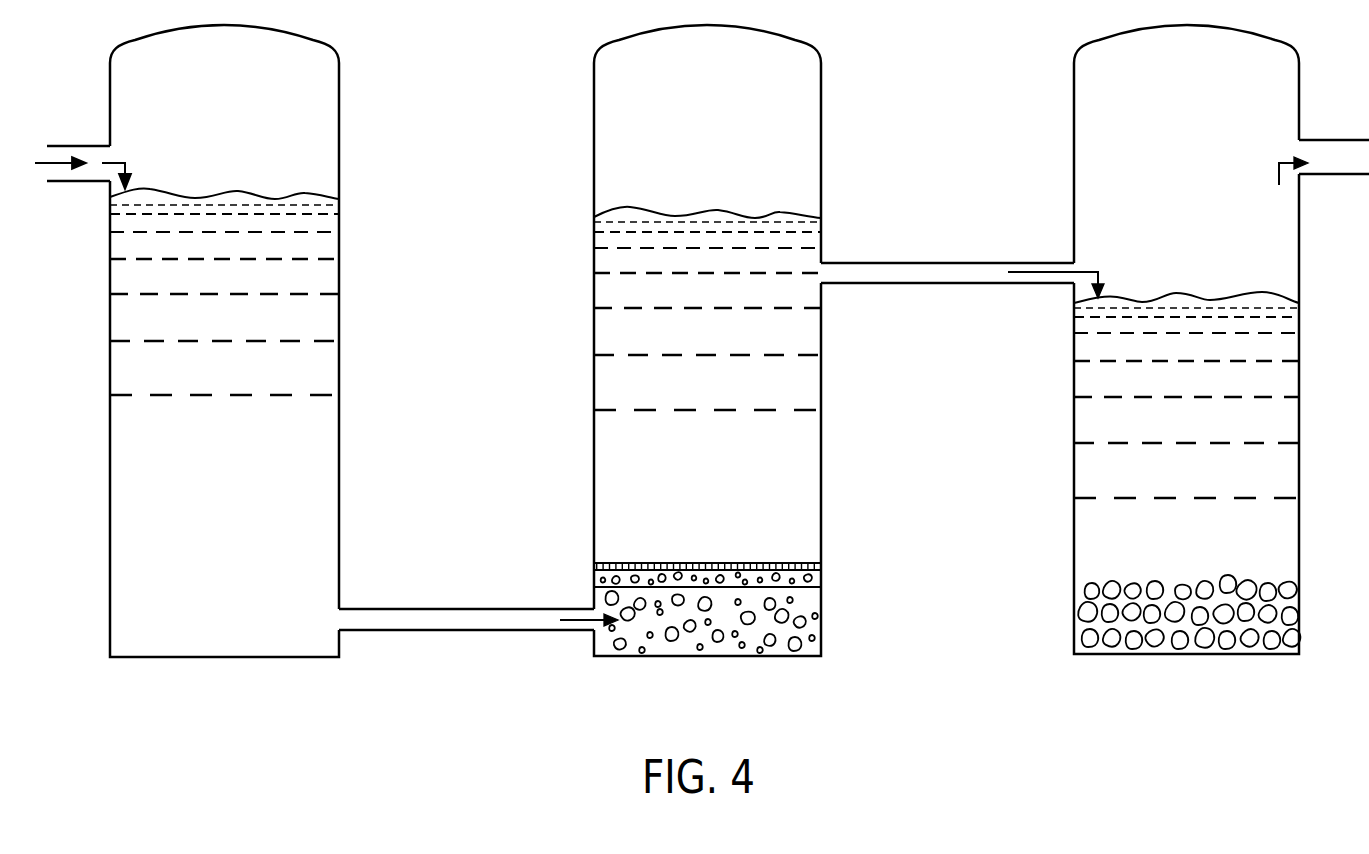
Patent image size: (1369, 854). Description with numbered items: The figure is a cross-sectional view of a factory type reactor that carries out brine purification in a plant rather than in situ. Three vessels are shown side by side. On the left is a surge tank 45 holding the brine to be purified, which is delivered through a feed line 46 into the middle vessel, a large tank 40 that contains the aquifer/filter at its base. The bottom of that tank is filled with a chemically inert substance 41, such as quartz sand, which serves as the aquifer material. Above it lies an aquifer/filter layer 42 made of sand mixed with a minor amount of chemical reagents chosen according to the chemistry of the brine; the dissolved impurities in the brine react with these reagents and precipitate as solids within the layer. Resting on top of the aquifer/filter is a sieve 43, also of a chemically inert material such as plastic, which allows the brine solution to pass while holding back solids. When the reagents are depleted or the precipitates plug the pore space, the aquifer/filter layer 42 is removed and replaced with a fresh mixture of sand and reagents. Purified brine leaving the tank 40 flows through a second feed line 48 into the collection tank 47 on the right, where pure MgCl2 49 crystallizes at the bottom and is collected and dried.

The large tank 40 is at (657, 392).
The chemically inert substance 41 is at (728, 648).
The aquifer/filter layer 42 is at (612, 580).
The sieve 43 is at (712, 562).
The surge tank 45 is at (297, 451).
The feed line 46 is at (348, 618).
The collection tank 47 is at (1277, 427).
The feed line 48 is at (1083, 271).
The pure MgCl2 49 is at (1106, 614).